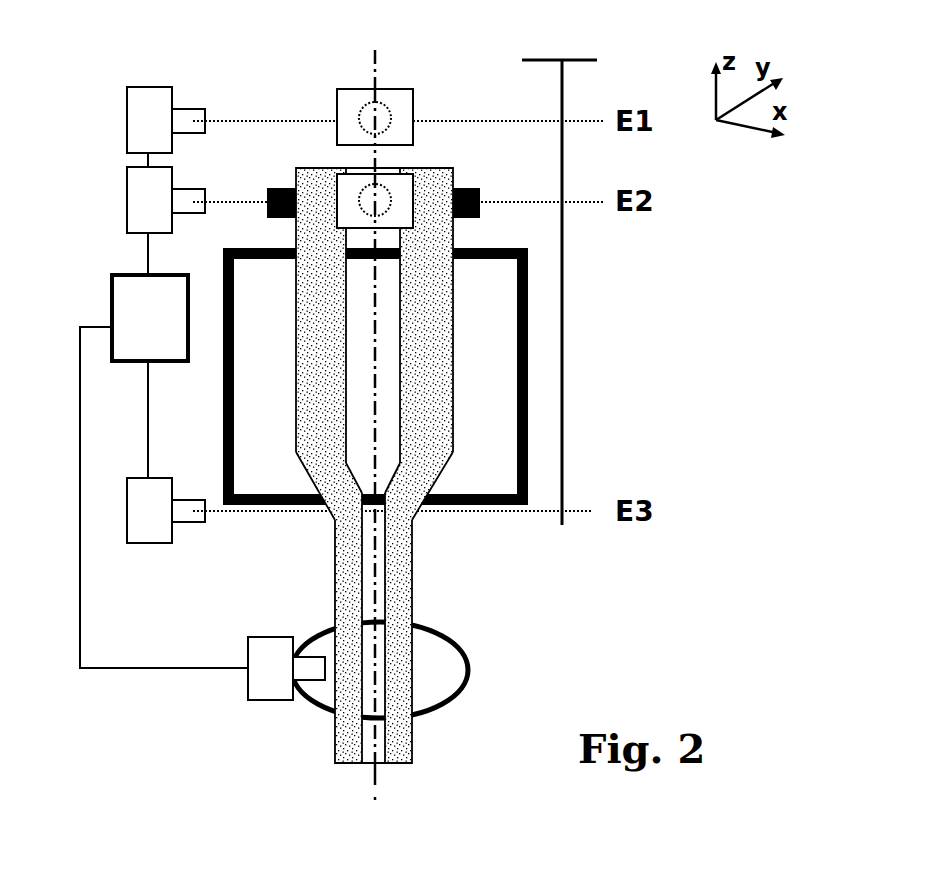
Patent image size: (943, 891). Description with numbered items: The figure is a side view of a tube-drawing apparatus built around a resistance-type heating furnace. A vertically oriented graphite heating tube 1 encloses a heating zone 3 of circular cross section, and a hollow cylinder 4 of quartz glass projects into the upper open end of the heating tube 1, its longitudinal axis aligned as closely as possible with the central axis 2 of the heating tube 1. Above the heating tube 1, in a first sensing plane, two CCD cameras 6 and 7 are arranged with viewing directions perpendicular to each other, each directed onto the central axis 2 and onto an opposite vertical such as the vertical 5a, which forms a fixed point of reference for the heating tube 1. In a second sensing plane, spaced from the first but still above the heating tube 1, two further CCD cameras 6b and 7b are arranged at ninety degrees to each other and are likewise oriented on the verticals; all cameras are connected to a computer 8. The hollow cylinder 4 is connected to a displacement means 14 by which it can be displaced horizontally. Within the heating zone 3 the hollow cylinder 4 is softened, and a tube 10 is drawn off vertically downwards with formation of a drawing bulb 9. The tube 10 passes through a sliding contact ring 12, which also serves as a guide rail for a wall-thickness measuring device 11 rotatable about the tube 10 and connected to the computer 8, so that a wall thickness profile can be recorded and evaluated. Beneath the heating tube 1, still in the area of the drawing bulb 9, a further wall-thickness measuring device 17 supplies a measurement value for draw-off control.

The heating tube 1 is at (528, 373).
The central axis 2 is at (290, 425).
The heating zone 3 is at (490, 318).
The hollow cylinder 4 is at (427, 393).
The vertical 5a is at (562, 95).
The CCD camera 6 is at (350, 113).
The further CCD camera 6b is at (400, 190).
The CCD camera 7 is at (145, 132).
The further CCD camera 7b is at (138, 207).
The computer 8 is at (128, 307).
The drawing bulb 9 is at (427, 480).
The tube 10 is at (402, 565).
The wall-thickness measuring device 11 is at (268, 678).
The sliding contact ring 12 is at (457, 697).
The displacement means 14 is at (480, 212).
The wall-thickness measuring device 17 is at (135, 532).